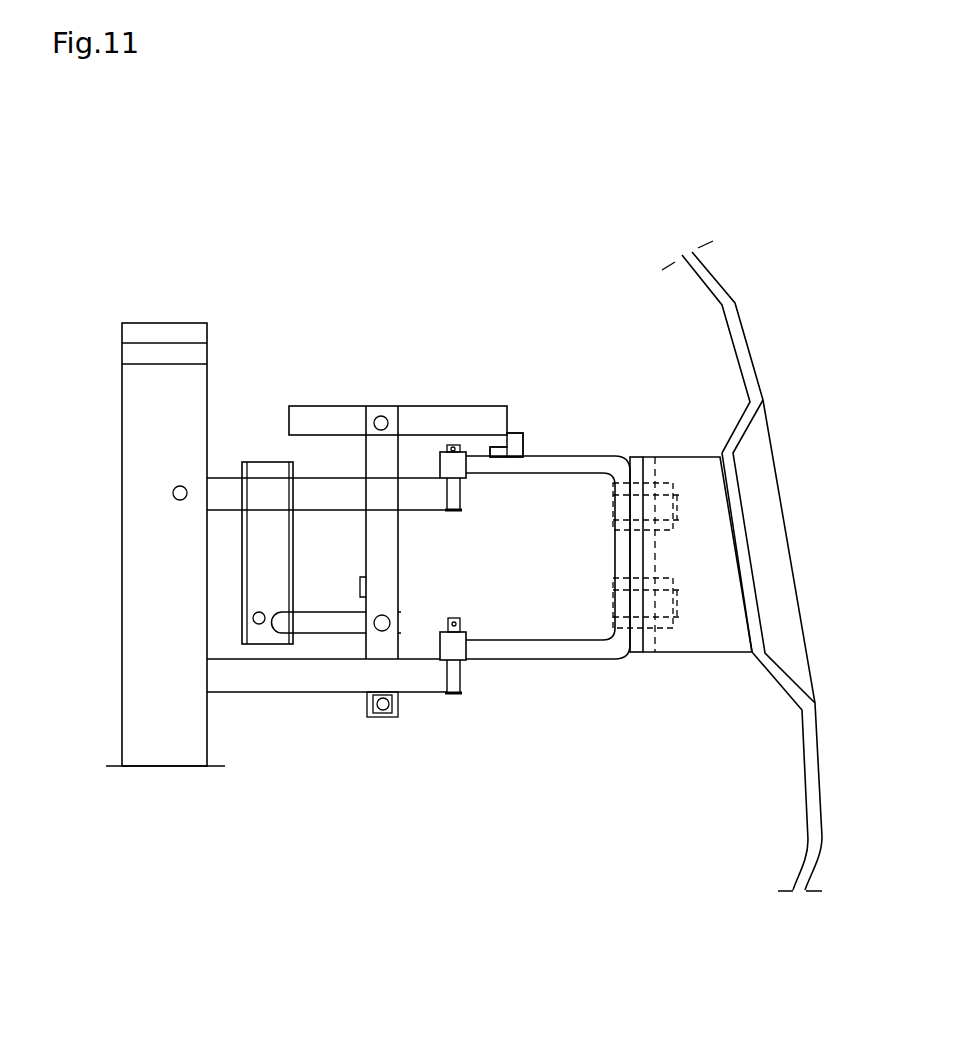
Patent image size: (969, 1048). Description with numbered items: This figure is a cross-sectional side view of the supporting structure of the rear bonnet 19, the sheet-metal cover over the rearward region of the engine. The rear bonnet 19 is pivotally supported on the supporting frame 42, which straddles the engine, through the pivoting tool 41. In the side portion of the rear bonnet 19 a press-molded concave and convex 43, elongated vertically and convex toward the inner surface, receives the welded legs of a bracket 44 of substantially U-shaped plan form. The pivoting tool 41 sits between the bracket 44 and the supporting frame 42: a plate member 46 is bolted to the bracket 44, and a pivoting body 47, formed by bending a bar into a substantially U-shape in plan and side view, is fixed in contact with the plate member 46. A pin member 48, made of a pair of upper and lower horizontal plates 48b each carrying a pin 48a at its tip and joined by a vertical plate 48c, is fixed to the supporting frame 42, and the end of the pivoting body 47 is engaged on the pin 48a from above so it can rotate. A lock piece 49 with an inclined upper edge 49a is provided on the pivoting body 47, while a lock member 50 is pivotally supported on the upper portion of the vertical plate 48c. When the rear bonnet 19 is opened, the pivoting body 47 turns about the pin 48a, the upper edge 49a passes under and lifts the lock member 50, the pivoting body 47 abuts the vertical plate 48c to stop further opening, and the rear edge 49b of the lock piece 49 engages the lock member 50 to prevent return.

The rear bonnet 19 is at (750, 363).
The pivoting tool 41 is at (432, 732).
The supporting frame 42 is at (202, 733).
The concave and convex 43 is at (742, 560).
The bracket 44 is at (688, 482).
The plate member 46 is at (633, 653).
The pivoting body 47 is at (563, 647).
The pin member 48 is at (346, 712).
The pin 48a is at (455, 465).
The horizontal plates 48b is at (411, 505).
The vertical plate 48c is at (365, 455).
The lock piece 49 is at (508, 448).
The inclined upper edge 49a is at (498, 447).
The rear edge 49b is at (526, 447).
The lock member 50 is at (414, 413).